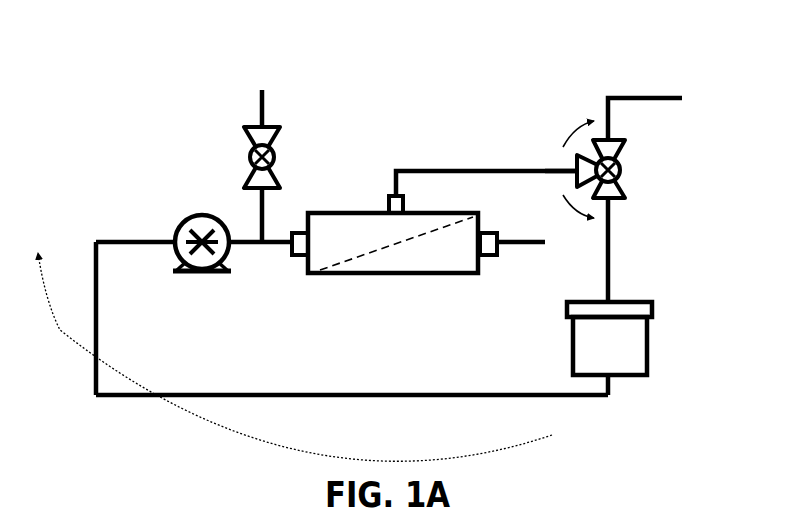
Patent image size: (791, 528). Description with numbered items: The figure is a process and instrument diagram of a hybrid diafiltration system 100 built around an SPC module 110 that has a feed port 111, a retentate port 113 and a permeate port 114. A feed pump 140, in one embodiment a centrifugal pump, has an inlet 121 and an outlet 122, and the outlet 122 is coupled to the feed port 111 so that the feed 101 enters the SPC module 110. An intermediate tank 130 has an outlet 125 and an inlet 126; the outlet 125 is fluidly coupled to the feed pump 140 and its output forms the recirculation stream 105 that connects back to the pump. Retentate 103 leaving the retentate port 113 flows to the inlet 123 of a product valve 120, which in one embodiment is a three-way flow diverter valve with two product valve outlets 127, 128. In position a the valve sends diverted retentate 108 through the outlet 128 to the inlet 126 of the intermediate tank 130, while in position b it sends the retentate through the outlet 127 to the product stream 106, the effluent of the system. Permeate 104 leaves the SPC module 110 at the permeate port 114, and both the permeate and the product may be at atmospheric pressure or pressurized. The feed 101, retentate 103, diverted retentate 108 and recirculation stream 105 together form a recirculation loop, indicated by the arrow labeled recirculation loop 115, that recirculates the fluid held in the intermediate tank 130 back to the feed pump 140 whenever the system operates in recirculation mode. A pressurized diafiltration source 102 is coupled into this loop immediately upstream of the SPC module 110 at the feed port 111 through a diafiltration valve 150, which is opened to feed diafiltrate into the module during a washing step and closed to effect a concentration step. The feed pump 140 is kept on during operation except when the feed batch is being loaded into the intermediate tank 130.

The hybrid diafiltration system 100 is at (392, 83).
The feed stream 101 is at (108, 240).
The diafiltration source 102 is at (265, 110).
The retentate stream 103 is at (415, 171).
The permeate stream 104 is at (520, 247).
The recirculation stream 105 is at (222, 397).
The product stream 106 is at (682, 100).
The diverted retentate 108 is at (605, 260).
The SPC module 110 is at (393, 243).
The feed port 111 is at (300, 258).
The retentate port 113 is at (390, 196).
The permeate port 114 is at (488, 233).
The recirculation loop 115 is at (197, 447).
The product valve 120 is at (630, 167).
The inlet 121 is at (173, 248).
The outlet 122 is at (233, 244).
The inlet 123 is at (575, 168).
The outlet 125 is at (607, 377).
The inlet 126 is at (612, 292).
The product valve outlet 127 is at (612, 139).
The product valve outlet 128 is at (613, 202).
The intermediate tank 130 is at (609, 338).
The feed pump 140 is at (197, 213).
The diafiltration valve 150 is at (253, 123).